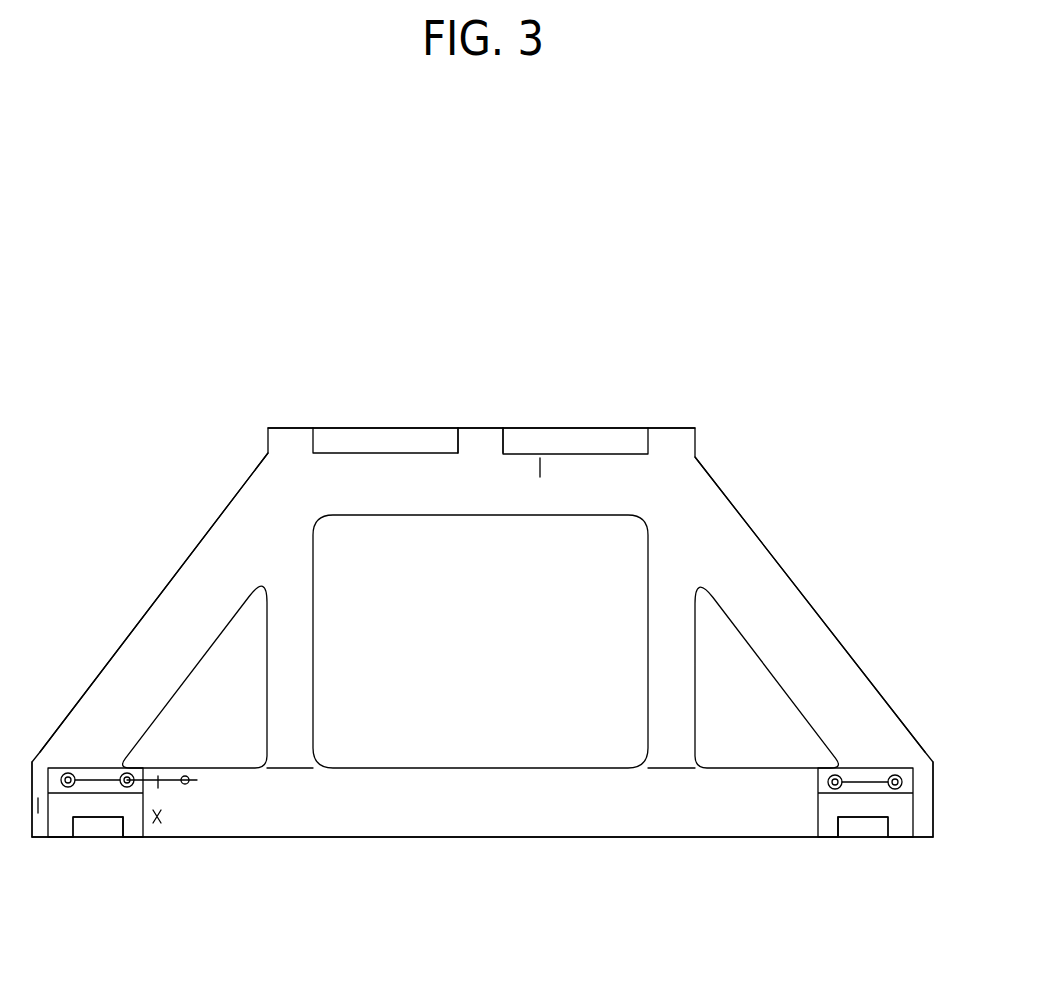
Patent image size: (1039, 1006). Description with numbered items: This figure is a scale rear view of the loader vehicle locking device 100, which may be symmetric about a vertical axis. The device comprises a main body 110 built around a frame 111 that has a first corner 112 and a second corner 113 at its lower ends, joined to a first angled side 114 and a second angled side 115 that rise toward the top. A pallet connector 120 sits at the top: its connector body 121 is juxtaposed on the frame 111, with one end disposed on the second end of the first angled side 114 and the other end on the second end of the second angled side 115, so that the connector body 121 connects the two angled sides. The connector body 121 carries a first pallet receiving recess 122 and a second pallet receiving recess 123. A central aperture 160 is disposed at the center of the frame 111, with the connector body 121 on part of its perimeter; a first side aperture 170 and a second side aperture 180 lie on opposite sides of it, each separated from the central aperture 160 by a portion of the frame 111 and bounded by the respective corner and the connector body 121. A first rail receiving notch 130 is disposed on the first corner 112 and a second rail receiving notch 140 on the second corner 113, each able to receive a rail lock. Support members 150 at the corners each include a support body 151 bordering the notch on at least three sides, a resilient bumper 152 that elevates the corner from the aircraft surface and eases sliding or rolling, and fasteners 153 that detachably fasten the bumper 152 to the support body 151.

The loader vehicle locking device 100 is at (705, 290).
The main body 110 is at (447, 888).
The frame 111 is at (302, 647).
The first corner 112 is at (933, 803).
The second corner 113 is at (38, 797).
The first angled side 114 is at (822, 620).
The second angled side 115 is at (177, 573).
The pallet connector 120 is at (335, 352).
The connector body 121 is at (480, 462).
The first pallet receiving recess 122 is at (587, 440).
The second pallet receiving recess 123 is at (388, 443).
The first rail receiving notch 130 is at (872, 847).
The second rail receiving notch 140 is at (120, 853).
The support member 150 is at (802, 853).
The support body 151 is at (828, 820).
The bumper 152 is at (862, 780).
The fastener 153 is at (898, 773).
The central aperture 160 is at (415, 735).
The first side aperture 170 is at (742, 763).
The second side aperture 180 is at (203, 755).